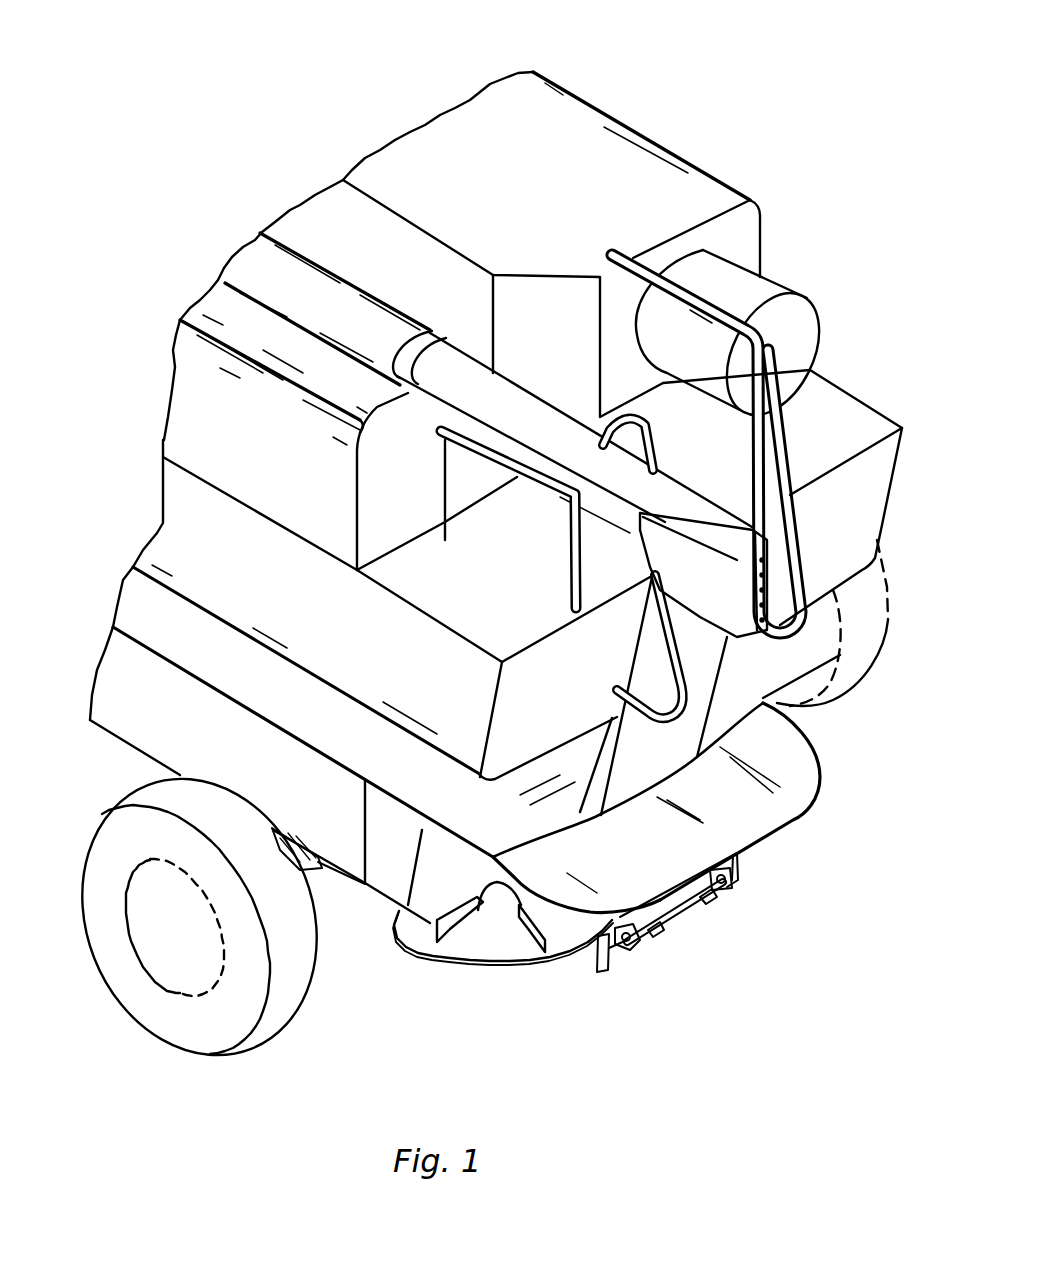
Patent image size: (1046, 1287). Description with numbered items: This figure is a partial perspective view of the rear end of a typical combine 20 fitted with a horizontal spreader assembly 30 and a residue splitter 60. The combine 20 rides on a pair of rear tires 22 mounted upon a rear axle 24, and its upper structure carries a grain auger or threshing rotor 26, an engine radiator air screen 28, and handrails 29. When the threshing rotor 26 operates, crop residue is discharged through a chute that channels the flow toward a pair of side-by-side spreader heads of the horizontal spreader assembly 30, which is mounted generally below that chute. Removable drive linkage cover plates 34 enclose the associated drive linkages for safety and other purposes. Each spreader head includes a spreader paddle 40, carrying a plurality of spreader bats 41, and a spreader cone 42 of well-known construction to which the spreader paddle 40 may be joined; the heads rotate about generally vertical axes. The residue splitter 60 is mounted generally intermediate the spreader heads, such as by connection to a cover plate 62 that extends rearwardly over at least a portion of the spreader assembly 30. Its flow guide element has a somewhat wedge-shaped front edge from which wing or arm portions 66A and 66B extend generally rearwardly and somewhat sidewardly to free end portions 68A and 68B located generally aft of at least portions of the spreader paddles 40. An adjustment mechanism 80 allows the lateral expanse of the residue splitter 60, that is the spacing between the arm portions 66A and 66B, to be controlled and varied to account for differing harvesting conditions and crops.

The combine 20 is at (565, 70).
The rear tires 22 is at (280, 1013).
The rear axle 24 is at (320, 873).
The threshing rotor 26 is at (358, 220).
The engine radiator air screen 28 is at (792, 338).
The handrails 29 is at (797, 530).
The horizontal spreader assembly 30 is at (467, 972).
The drive linkage cover plates 34 is at (547, 788).
The spreader paddle 40 is at (518, 973).
The spreader bats 41 is at (523, 925).
The spreader cone 42 is at (507, 883).
The residue splitter 60 is at (710, 923).
The cover plate 62 is at (800, 765).
The arm portion 66A is at (635, 950).
The arm portion 66B is at (733, 893).
The free end portion 68A is at (597, 957).
The free end portion 68B is at (737, 862).
The adjustment mechanism 80 is at (670, 923).